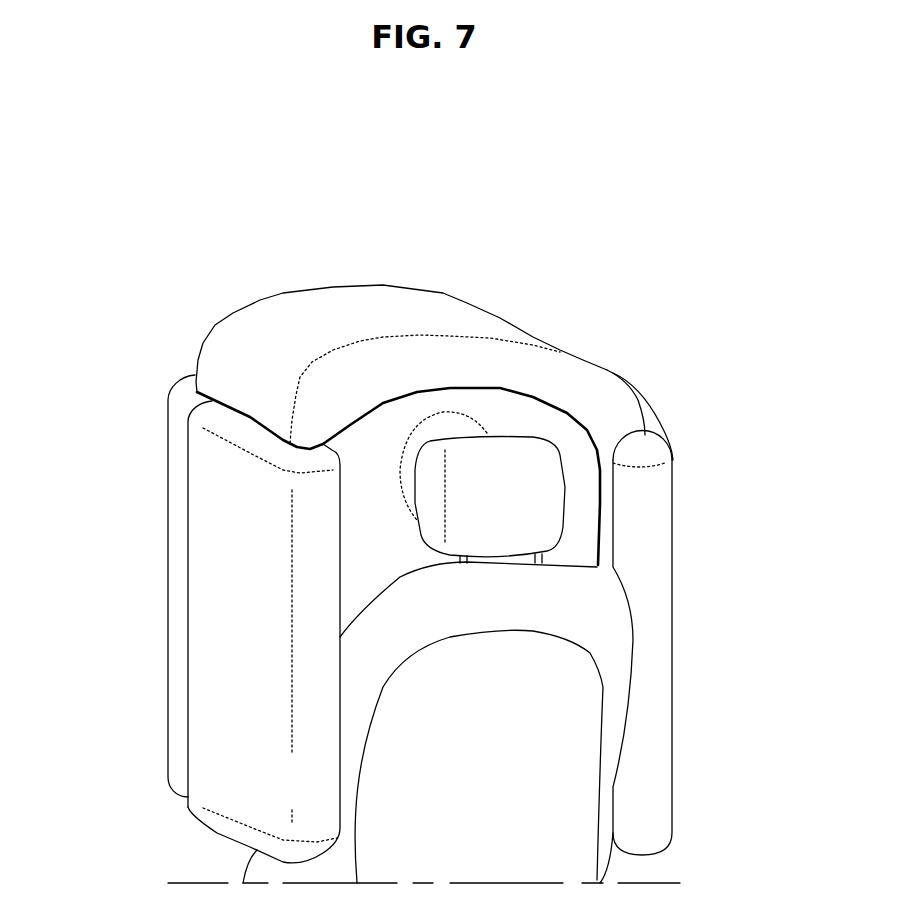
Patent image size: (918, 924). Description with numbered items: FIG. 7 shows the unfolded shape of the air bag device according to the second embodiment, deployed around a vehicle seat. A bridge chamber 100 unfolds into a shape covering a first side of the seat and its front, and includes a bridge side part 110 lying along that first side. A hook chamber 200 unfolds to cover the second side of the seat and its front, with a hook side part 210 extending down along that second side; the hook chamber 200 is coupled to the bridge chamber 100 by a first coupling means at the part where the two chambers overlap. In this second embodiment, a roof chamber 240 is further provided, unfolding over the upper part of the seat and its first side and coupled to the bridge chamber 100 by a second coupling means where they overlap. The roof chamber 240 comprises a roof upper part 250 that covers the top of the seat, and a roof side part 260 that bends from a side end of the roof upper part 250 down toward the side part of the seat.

The bridge chamber 100 is at (675, 670).
The bridge side part 110 is at (658, 417).
The hook chamber 200 is at (160, 523).
The hook side part 210 is at (207, 675).
The roof chamber 240 is at (282, 291).
The roof upper part 250 is at (357, 300).
The roof side part 260 is at (577, 513).